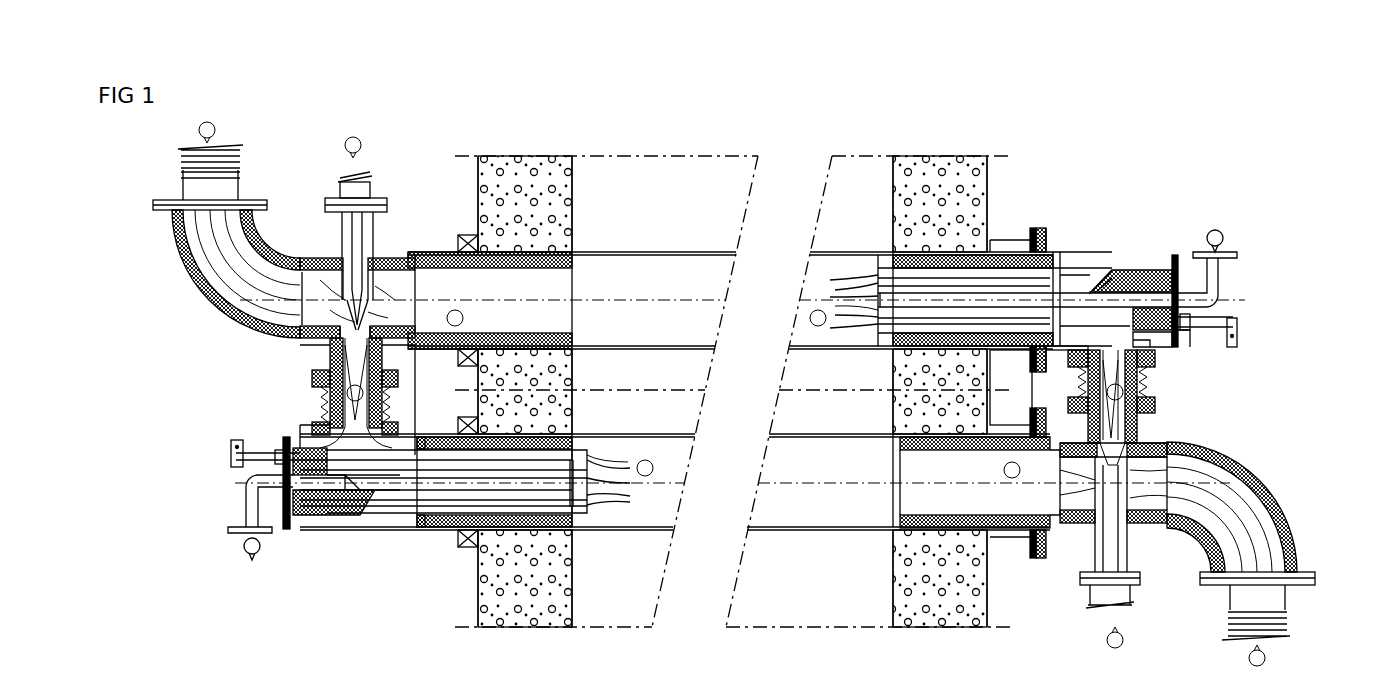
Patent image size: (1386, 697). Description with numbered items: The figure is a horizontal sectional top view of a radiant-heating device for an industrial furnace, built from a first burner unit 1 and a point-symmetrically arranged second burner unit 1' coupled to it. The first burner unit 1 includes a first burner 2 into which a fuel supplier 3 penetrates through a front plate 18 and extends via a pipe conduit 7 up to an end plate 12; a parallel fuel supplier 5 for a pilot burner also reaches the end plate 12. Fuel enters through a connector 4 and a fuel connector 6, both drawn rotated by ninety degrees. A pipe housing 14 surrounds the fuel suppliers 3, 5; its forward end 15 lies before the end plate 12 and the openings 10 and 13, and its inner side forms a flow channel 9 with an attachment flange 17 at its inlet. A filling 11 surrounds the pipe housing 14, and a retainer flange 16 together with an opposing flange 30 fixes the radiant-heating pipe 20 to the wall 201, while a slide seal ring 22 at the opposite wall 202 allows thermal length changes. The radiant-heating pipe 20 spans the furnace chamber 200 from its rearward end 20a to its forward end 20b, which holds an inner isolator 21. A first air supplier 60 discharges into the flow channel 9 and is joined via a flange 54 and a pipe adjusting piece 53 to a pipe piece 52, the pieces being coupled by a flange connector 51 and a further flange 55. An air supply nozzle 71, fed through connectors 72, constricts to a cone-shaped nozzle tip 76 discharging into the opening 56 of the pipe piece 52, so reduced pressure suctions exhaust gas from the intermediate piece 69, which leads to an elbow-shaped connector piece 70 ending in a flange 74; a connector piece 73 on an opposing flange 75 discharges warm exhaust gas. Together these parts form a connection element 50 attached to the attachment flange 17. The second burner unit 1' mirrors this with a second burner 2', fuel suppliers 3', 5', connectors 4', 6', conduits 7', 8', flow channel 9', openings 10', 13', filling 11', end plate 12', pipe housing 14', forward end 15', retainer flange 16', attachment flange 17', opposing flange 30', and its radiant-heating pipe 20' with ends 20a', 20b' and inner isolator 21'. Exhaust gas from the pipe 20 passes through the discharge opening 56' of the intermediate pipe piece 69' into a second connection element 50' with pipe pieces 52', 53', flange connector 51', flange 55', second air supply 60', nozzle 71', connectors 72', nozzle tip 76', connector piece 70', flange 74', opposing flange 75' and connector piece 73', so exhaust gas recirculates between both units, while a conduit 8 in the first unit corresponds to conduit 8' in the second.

The first burner unit 1 is at (1059, 170).
The second burner unit 1' is at (404, 610).
The first burner 2 is at (1131, 271).
The second burner 2' is at (334, 508).
The fuel supplier 3 is at (1221, 279).
The fuel supplier 3' is at (249, 499).
The connector 4 is at (1248, 218).
The connector 4' is at (217, 563).
The fuel supplier for pilot burner 5 is at (1205, 349).
The fuel supplier for pilot burner 5' is at (268, 434).
The fuel connector 6 is at (1238, 355).
The fuel connector 6' is at (229, 427).
The pipe conduit 7 is at (1091, 277).
The pipe conduit 7' is at (363, 516).
The conduit 8 is at (1163, 349).
The conduit 8' is at (285, 438).
The flow channel 9 is at (974, 275).
The flow channel 9' is at (457, 506).
The opening 10 is at (939, 278).
The opening 10' is at (481, 483).
The filling 11 is at (1018, 222).
The filling 11' is at (446, 515).
The end plate 12 is at (990, 288).
The end plate 12' is at (469, 510).
The opening 13 is at (876, 319).
The opening 13' is at (589, 452).
The pipe housing 14 is at (955, 277).
The pipe housing 14' is at (513, 508).
The forward end 15 is at (848, 336).
The forward end 15' is at (618, 430).
The retainer flange 16 is at (1082, 260).
The retainer flange 16' is at (1029, 575).
The attachment flange 17 is at (1018, 391).
The attachment flange 17' is at (287, 414).
The front plate 18 is at (1178, 258).
The radiant-heating pipe 20 is at (742, 275).
The radiant-heating pipe 20' is at (732, 513).
The rearward end 20a is at (889, 256).
The rearward end 20a' is at (570, 442).
The forward end 20b is at (564, 256).
The forward end 20b' is at (868, 457).
The inner isolator 21 is at (490, 277).
The inner isolator 21' is at (946, 482).
The slide seal ring 22 is at (462, 235).
The opposing flange 30 is at (1026, 267).
The opposing flange 30' is at (283, 509).
The connection element 50 is at (1227, 423).
The second connection element 50' is at (241, 359).
The flange connector 51 is at (1130, 405).
The flange connector 51' is at (323, 393).
The pipe piece 52 is at (1081, 483).
The pipe piece 52' is at (368, 400).
The pipe adjusting piece 53 is at (1096, 379).
The pipe adjusting piece 53' is at (337, 385).
The flange 54 is at (1158, 366).
The flange 55 is at (1129, 390).
The flange 55' is at (376, 411).
The opening 56 is at (1132, 514).
The discharge opening 56' is at (336, 265).
The first air supplier 60 is at (1108, 260).
The second air supply 60' is at (353, 513).
The intermediate piece 69 is at (1180, 512).
The intermediate pipe piece 69' is at (344, 277).
The connector piece 70 is at (1249, 507).
The connector piece 70' is at (215, 274).
The air supply nozzle 71 is at (1132, 577).
The air supply nozzle 71' is at (339, 256).
The connectors 72 is at (1123, 611).
The connectors 72' is at (340, 163).
The connector piece 73 is at (1279, 613).
The connector piece 73' is at (180, 170).
The flange 74 is at (1283, 567).
The flange 74' is at (180, 213).
The opposing flange 75 is at (1283, 587).
The opposing flange 75' is at (180, 191).
The nozzle tip 76 is at (1078, 514).
The nozzle tip 76' is at (376, 284).
The furnace chamber 200 is at (652, 156).
The wall 201 is at (928, 156).
The wall 202 is at (503, 156).